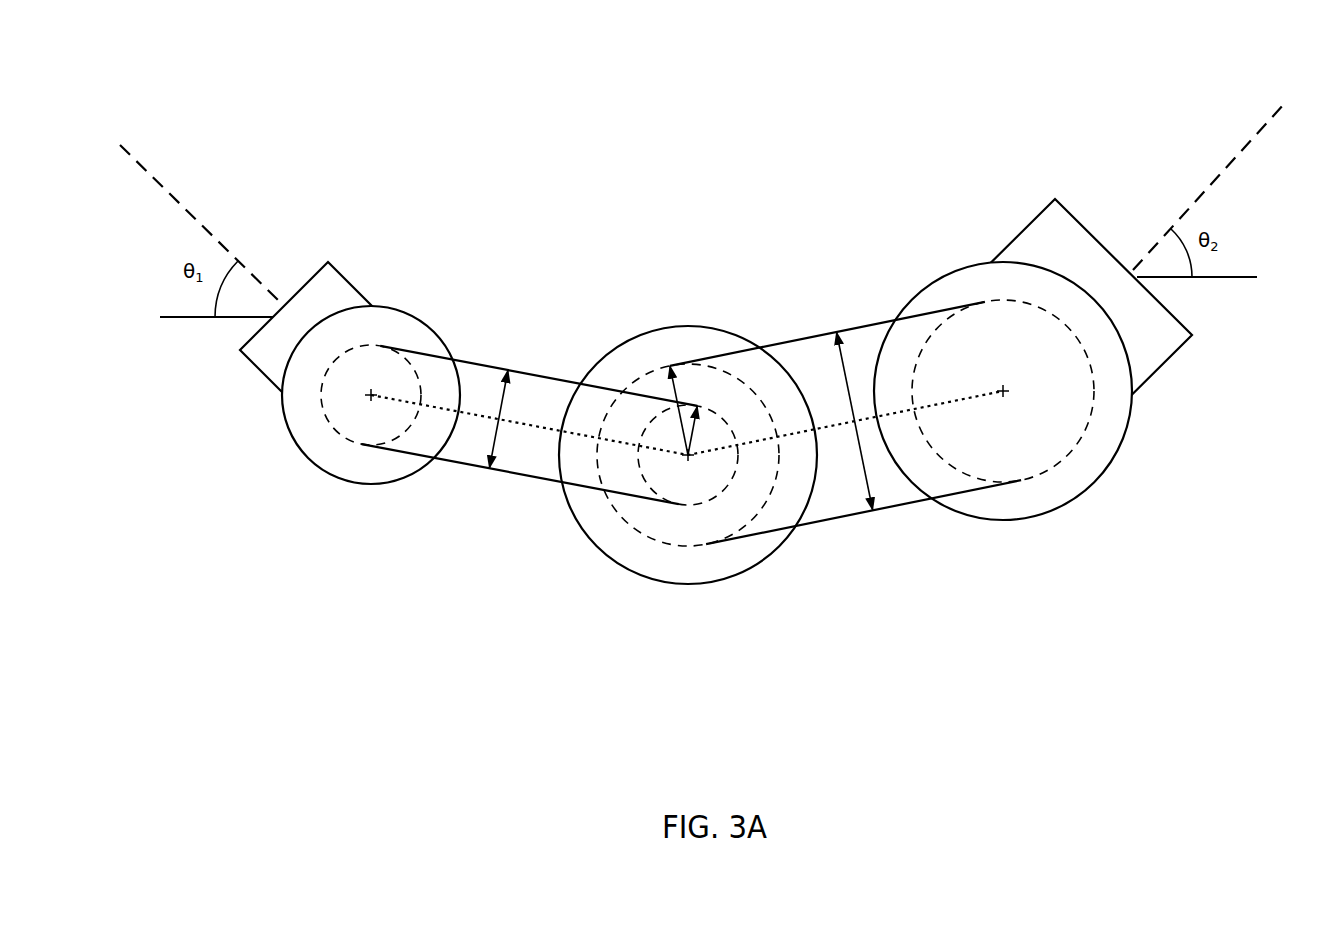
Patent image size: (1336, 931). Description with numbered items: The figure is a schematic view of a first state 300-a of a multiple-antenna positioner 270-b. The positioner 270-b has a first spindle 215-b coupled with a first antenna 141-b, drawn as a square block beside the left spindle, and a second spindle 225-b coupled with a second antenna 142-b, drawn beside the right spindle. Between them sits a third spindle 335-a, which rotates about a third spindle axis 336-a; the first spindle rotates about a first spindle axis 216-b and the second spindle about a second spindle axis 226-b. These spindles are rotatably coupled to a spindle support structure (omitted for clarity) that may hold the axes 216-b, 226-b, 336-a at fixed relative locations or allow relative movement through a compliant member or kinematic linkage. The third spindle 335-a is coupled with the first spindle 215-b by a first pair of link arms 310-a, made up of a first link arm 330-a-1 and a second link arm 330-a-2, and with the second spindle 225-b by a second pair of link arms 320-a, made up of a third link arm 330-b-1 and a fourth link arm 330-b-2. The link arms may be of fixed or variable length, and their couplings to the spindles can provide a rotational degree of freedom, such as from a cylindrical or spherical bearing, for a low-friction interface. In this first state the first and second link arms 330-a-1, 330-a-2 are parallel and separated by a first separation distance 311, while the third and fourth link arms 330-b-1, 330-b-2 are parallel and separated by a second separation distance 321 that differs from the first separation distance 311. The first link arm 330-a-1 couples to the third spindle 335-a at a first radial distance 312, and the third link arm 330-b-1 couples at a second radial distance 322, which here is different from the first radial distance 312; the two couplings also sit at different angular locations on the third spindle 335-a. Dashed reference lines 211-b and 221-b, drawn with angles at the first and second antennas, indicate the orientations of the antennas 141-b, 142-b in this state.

The first state 300-a is at (1177, 75).
The reference axis of first link 211-b is at (181, 203).
The reference axis of second link 221-b is at (1228, 170).
The first antenna 141-b is at (357, 285).
The second antenna 142-b is at (1015, 239).
The first spindle 215-b is at (332, 478).
The first spindle axis 216-b is at (371, 392).
The second spindle 225-b is at (967, 515).
The second spindle axis 226-b is at (1002, 391).
The third spindle 335-a is at (673, 328).
The third spindle axis 336-a is at (689, 458).
The first link arm 330-a-1 is at (518, 338).
The second link arm 330-a-2 is at (518, 477).
The third link arm 330-b-1 is at (862, 328).
The fourth link arm 330-b-2 is at (850, 517).
The first separation distance 311 is at (495, 419).
The second separation distance 321 is at (848, 421).
The first radial distance 312 is at (709, 430).
The second radial distance 322 is at (689, 410).
The first pair of link arms 310-a is at (483, 563).
The second pair of link arms 320-a is at (853, 582).
The multiple-antenna positioner 270-b is at (568, 683).